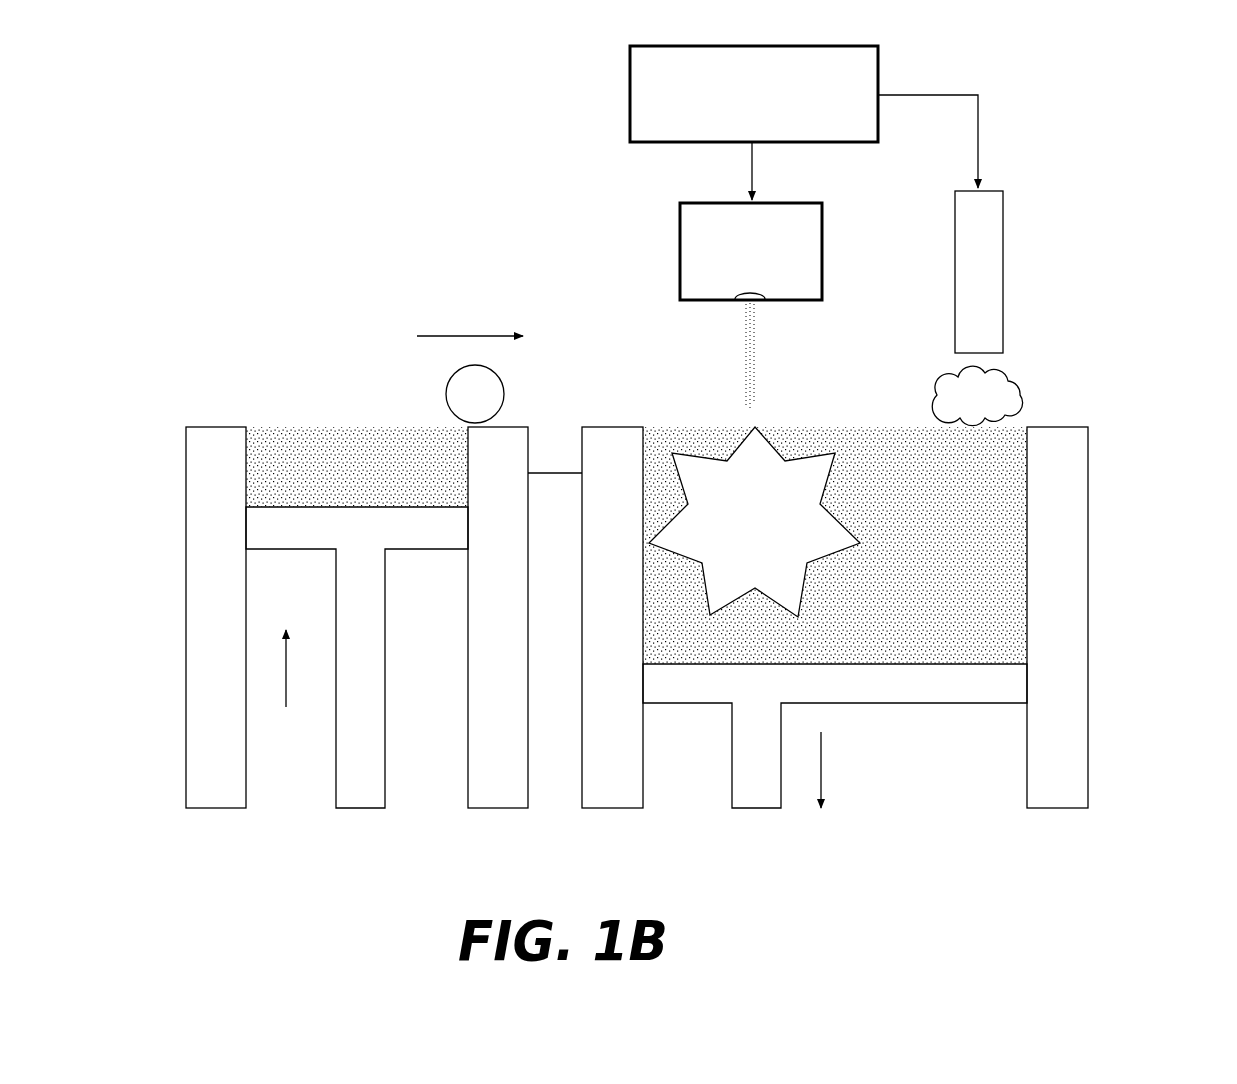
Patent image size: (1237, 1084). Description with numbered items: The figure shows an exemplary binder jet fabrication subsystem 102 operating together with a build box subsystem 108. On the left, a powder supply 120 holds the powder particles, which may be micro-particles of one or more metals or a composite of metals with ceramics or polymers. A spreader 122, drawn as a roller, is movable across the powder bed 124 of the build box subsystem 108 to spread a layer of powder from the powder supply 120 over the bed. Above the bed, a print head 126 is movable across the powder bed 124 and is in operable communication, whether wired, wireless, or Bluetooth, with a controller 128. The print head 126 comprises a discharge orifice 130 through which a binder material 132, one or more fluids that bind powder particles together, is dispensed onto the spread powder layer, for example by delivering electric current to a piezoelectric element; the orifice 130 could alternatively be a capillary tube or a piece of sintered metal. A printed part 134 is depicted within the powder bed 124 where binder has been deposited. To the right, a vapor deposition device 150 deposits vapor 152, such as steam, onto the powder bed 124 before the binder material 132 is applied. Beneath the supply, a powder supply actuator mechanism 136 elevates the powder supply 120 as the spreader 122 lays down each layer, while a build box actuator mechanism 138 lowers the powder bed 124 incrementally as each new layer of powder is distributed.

The binder jet fabrication subsystem 102 is at (1064, 347).
The build box subsystem 108 is at (1116, 688).
The powder supply 120 is at (258, 438).
The spreader 122 is at (452, 398).
The powder bed 124 is at (840, 440).
The print head 126 is at (680, 261).
The controller 128 is at (630, 92).
The discharge orifice 130 is at (723, 296).
The binder material 132 is at (750, 397).
The printed part 134 is at (767, 448).
The powder supply actuator mechanism 136 is at (363, 797).
The build box actuator mechanism 138 is at (756, 797).
The vapor deposition device 150 is at (955, 238).
The vapor 152 is at (1020, 388).